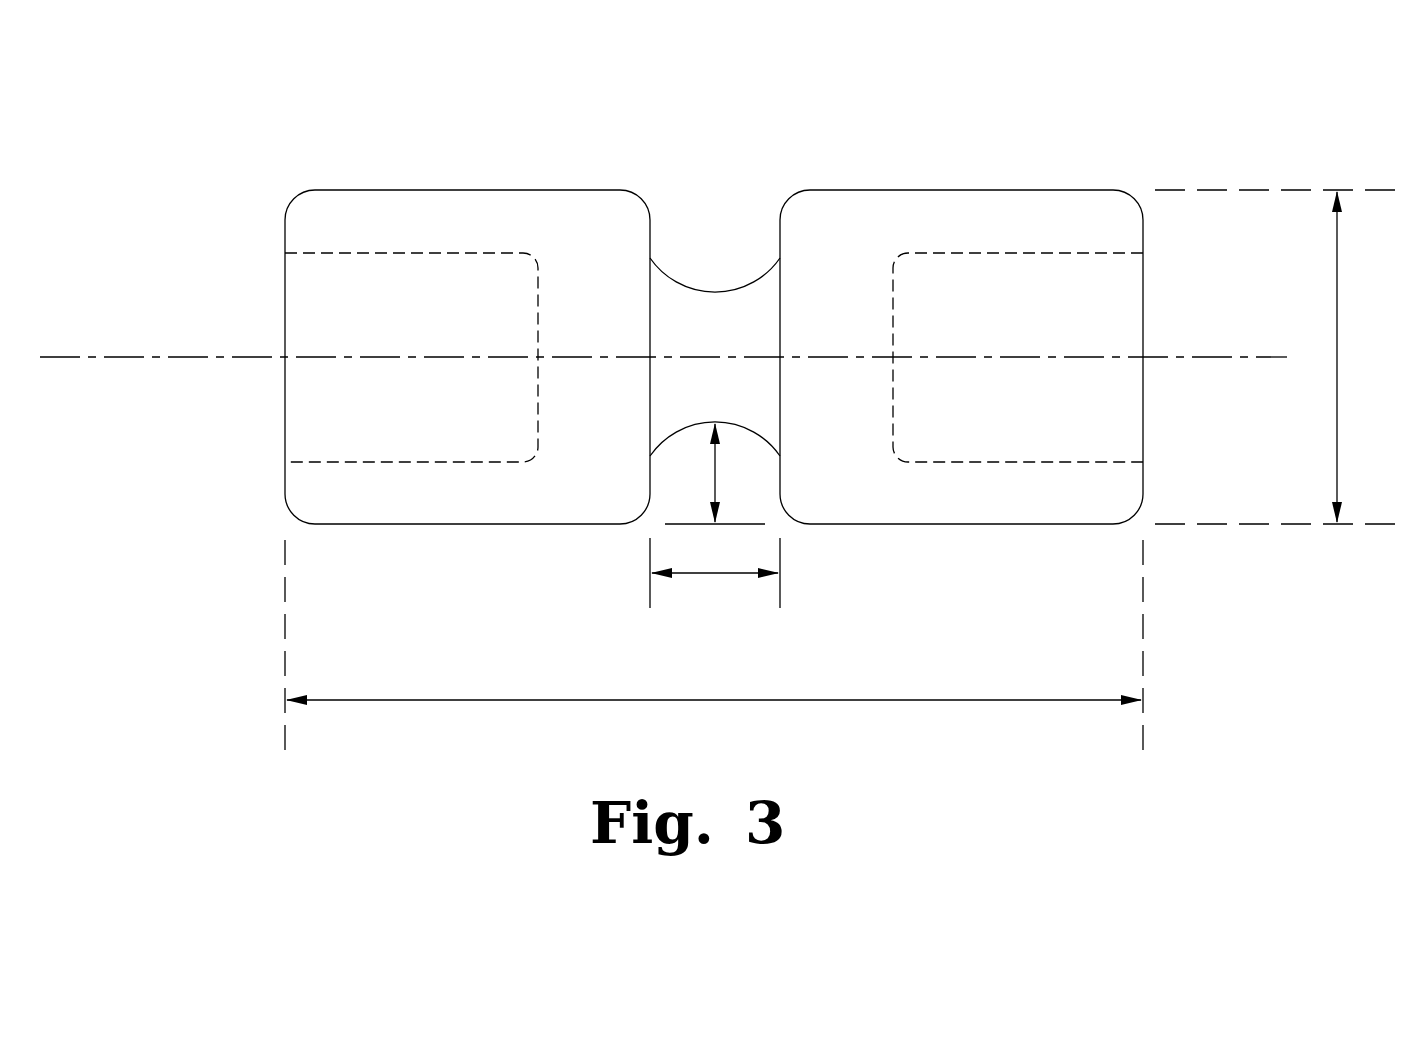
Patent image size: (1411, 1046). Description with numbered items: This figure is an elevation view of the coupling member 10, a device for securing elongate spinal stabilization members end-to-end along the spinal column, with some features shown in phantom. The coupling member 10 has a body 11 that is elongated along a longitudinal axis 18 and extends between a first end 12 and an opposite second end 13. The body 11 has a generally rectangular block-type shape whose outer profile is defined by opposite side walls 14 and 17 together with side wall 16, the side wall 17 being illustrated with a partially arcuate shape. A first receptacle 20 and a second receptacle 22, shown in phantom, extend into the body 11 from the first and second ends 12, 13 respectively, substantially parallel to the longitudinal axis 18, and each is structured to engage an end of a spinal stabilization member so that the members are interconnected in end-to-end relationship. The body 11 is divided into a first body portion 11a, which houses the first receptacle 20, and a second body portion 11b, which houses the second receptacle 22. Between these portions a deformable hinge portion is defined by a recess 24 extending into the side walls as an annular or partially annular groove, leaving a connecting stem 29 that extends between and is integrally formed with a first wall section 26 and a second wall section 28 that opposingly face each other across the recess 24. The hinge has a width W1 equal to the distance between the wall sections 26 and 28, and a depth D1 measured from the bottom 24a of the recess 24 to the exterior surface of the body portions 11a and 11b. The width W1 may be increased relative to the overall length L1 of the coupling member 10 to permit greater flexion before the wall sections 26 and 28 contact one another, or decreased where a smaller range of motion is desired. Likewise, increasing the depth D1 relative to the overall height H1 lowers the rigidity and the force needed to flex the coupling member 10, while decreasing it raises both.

The coupling member 10 is at (196, 147).
The body 11 is at (468, 176).
The first body portion 11a is at (1115, 207).
The second body portion 11b is at (300, 497).
The first end 12 is at (1143, 398).
The second end 13 is at (285, 247).
The side wall 14 is at (1060, 190).
The side wall 16 is at (305, 217).
The side wall 17 is at (860, 524).
The longitudinal axis 18 is at (1260, 357).
The first receptacle 20 is at (1000, 443).
The second receptacle 22 is at (428, 445).
The recess 24 is at (715, 290).
The bottom of recess 24a is at (690, 425).
The first wall section 26 is at (780, 232).
The second wall section 28 is at (650, 232).
The connecting stem 29 is at (663, 313).
The depth D1 is at (715, 470).
The width W1 is at (720, 573).
The overall height H1 is at (1338, 388).
The overall length L1 is at (697, 703).